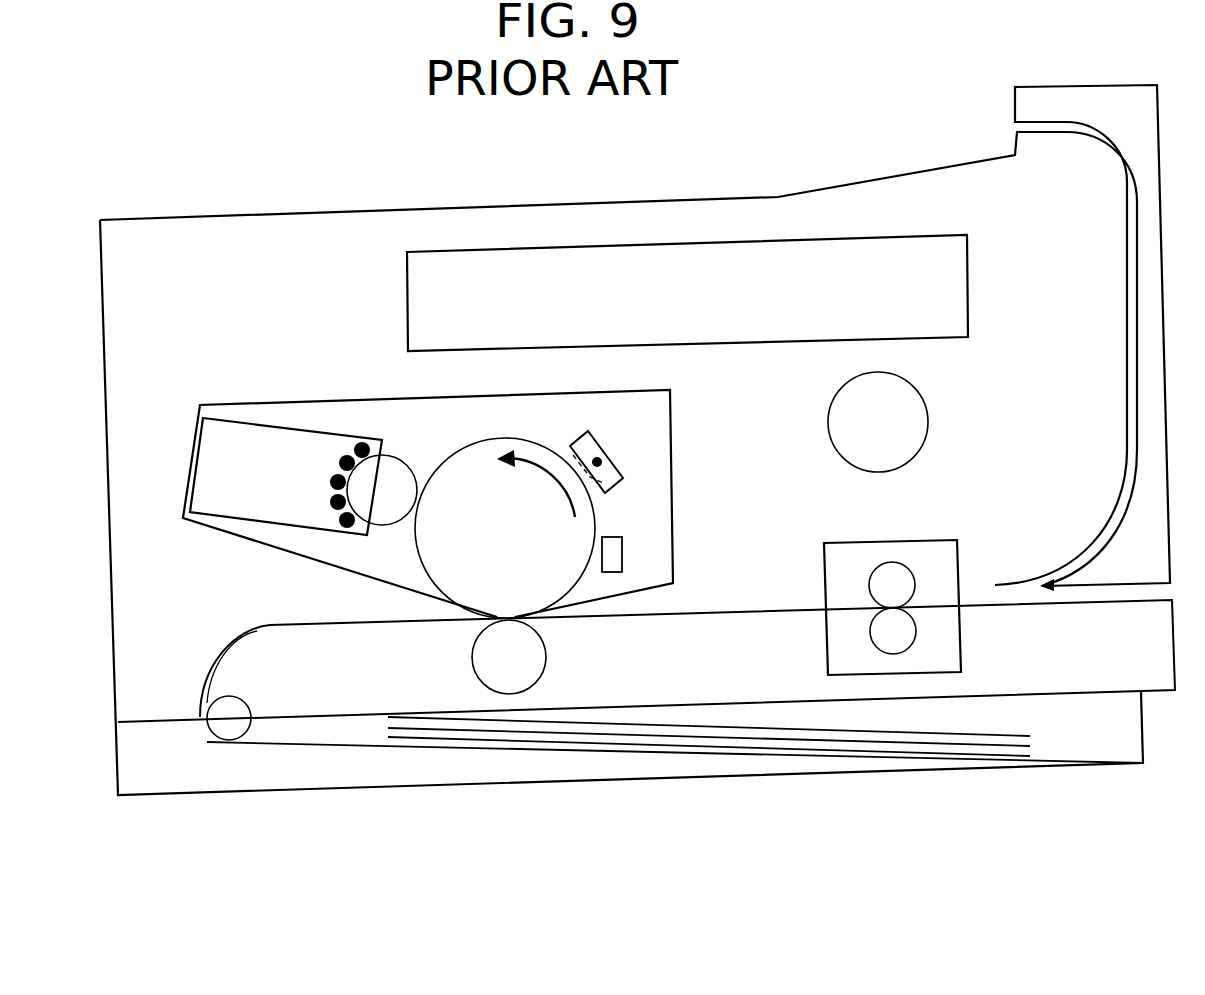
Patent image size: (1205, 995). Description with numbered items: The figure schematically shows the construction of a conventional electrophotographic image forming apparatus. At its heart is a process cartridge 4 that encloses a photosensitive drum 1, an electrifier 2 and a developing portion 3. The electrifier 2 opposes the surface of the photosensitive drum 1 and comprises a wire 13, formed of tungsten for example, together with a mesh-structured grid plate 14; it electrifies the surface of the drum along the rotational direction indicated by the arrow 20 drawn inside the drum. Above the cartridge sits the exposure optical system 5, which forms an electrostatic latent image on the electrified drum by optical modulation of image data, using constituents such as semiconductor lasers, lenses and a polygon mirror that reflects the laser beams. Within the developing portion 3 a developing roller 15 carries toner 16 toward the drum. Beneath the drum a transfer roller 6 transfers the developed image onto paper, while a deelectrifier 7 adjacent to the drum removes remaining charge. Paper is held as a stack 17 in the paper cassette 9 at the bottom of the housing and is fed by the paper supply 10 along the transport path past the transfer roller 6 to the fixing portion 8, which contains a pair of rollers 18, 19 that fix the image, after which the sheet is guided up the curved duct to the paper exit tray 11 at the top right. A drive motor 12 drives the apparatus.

The photosensitive drum 1 is at (460, 485).
The electrifier 2 is at (617, 478).
The developing portion 3 is at (232, 432).
The process cartridge 4 is at (347, 415).
The exposure optical system 5 is at (953, 285).
The transfer roller 6 is at (488, 657).
The deelectrifier 7 is at (613, 552).
The fixing portion 8 is at (957, 560).
The paper cassette 9 is at (1080, 755).
The paper supply 10 is at (225, 728).
The paper exit tray 11 is at (885, 175).
The drive motor 12 is at (908, 423).
The wire 13 is at (583, 438).
The grid plate 14 is at (617, 462).
The developing roller 15 is at (388, 497).
The toner 16 is at (333, 488).
The paper stack 17 is at (670, 757).
The heat roller 18 is at (880, 578).
The pressure roller 19 is at (882, 633).
The rotation direction arrow 20 is at (470, 438).